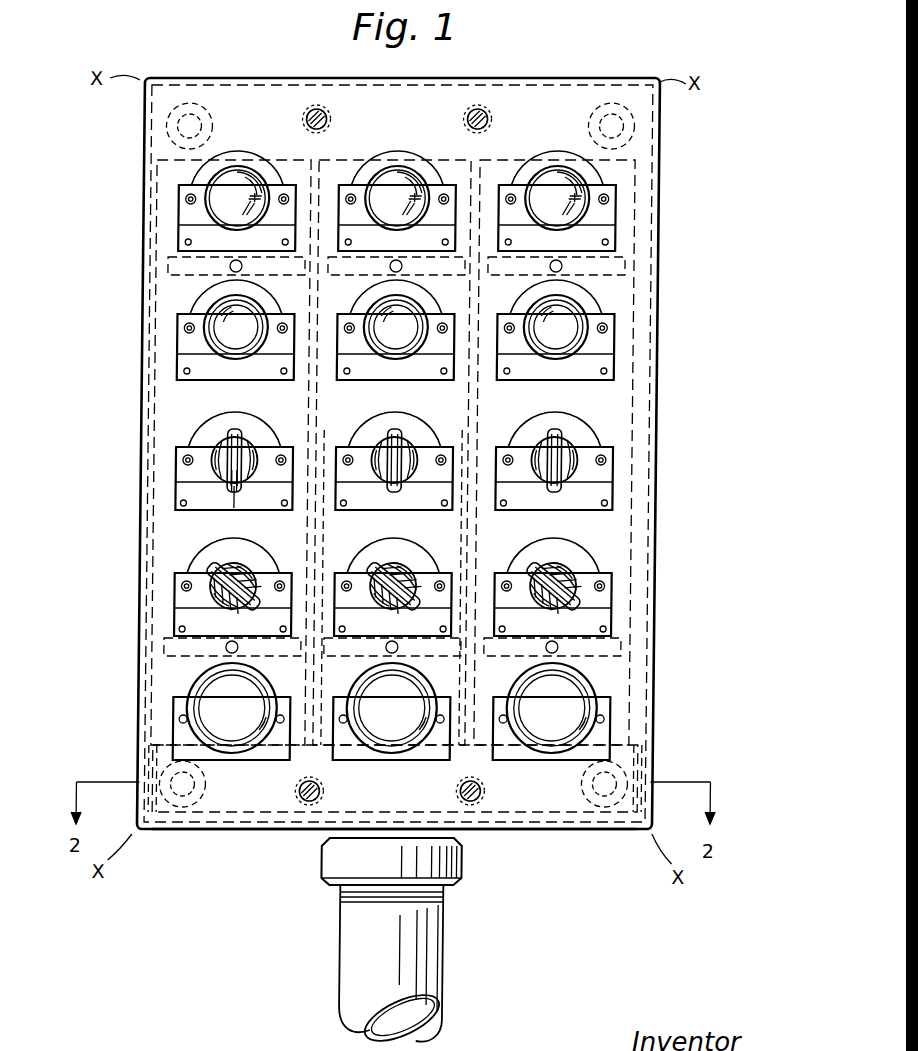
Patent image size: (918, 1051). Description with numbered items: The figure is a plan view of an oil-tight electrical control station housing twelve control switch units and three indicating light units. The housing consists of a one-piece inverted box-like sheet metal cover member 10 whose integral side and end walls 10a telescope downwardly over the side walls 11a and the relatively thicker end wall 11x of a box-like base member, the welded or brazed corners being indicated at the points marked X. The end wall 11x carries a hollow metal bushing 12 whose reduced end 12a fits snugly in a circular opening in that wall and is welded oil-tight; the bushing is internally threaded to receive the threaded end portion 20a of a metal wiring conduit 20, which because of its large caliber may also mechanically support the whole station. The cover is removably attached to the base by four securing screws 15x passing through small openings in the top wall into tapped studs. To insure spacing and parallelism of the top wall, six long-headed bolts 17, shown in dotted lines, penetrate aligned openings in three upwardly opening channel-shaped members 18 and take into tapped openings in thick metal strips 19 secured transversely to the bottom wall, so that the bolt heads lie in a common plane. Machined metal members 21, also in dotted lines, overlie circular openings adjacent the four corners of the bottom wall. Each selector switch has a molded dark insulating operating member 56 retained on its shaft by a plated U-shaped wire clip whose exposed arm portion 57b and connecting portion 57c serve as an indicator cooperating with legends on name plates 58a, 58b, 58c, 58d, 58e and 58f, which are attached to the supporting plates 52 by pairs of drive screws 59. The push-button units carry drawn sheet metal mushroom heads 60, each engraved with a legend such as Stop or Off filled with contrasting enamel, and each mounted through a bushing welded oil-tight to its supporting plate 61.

The cover member 10 is at (661, 128).
The side and end walls of cover member 10a is at (688, 172).
The side walls of base member 11a is at (690, 766).
The end wall of base member 11x is at (250, 814).
The bushing 12 is at (354, 864).
The reduced end of bushing 12a is at (450, 838).
The securing screws 15x is at (500, 852).
The long-headed bolts 17 is at (170, 265).
The channel-shaped members 18 is at (352, 162).
The metal strips 19 is at (590, 278).
The wiring conduit 20 is at (432, 960).
The threaded end portion of conduit 20a is at (452, 896).
The machined metal members 21 is at (190, 103).
The supporting plates 52 is at (392, 511).
The operating member 56 is at (240, 440).
The arm portion of wire clip 57b is at (240, 462).
The connecting portion of wire clip 57c is at (238, 506).
The name plate 58a is at (194, 499).
The name plate 58b is at (430, 512).
The name plate 58c is at (600, 508).
The name plate 58d is at (194, 620).
The name plate 58e is at (350, 620).
The name plate 58f is at (606, 632).
The drive screws 59 is at (180, 462).
The mushroom head operating member 60 is at (236, 736).
The supporting plate 61 is at (392, 729).